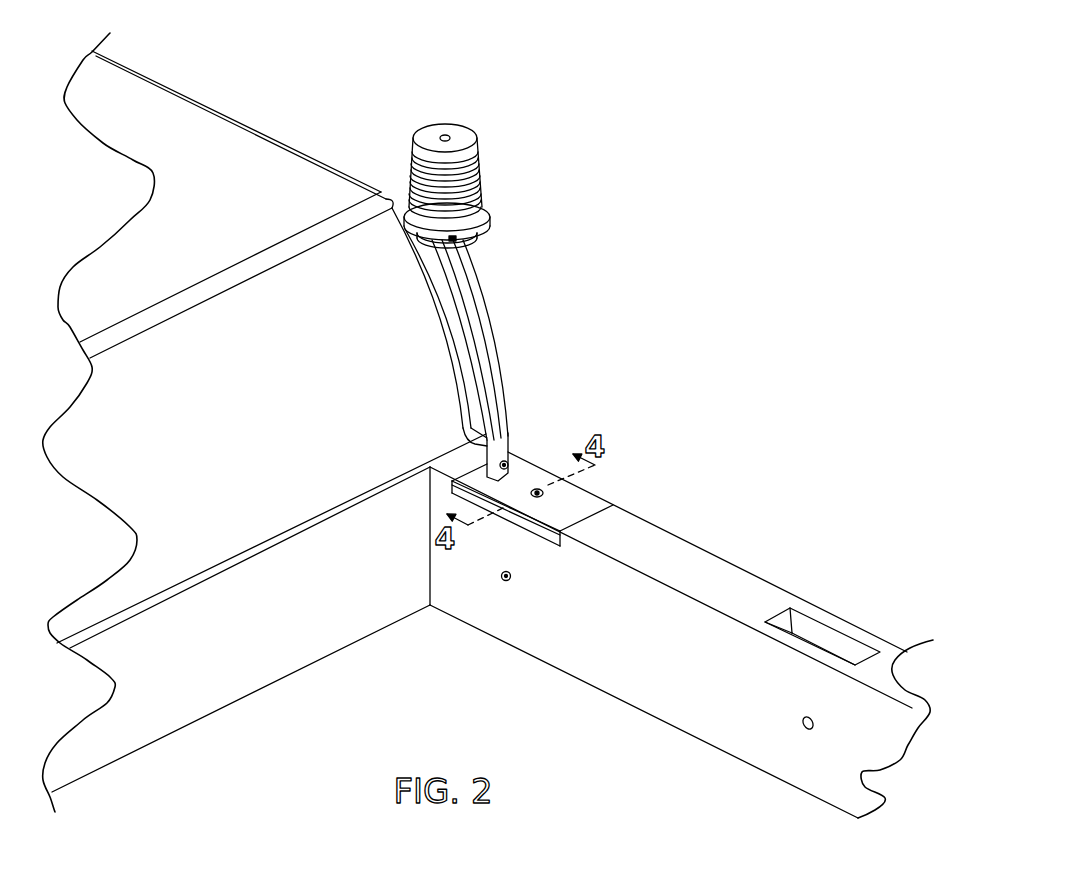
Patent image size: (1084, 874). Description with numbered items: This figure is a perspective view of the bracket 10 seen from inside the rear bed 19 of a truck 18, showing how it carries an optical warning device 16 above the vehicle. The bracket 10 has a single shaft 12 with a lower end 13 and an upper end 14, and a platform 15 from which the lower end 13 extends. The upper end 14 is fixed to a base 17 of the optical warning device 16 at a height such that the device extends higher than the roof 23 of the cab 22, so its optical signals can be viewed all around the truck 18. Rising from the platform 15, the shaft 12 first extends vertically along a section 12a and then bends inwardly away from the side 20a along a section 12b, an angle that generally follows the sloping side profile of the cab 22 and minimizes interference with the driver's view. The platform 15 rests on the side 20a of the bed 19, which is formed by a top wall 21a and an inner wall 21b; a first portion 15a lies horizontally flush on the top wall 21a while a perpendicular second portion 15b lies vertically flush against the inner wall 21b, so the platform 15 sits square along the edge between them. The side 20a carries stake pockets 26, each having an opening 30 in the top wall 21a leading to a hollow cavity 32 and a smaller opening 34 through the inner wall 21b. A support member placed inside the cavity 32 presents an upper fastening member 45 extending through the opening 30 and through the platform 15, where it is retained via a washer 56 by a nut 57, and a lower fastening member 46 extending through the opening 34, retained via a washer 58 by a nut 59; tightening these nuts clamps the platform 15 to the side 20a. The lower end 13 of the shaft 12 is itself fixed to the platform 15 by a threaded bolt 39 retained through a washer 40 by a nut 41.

The bracket 10 is at (627, 202).
The shaft 12 is at (506, 340).
The section of shaft 12a is at (510, 438).
The section of shaft 12b is at (483, 328).
The lower end 13 is at (461, 427).
The upper end 14 is at (460, 236).
The platform 15 is at (573, 525).
The first portion 15a is at (582, 522).
The second portion 15b is at (522, 528).
The optical warning device 16 is at (480, 155).
The base 17 is at (493, 200).
The truck 18 is at (320, 153).
The rear bed 19 is at (420, 703).
The side 20a is at (683, 550).
The top wall 21a is at (657, 528).
The inner wall 21b is at (608, 655).
The cab 22 is at (164, 86).
The roof 23 is at (220, 160).
The stake pocket 26 is at (780, 612).
The opening 30 is at (799, 603).
The cavity 32 is at (812, 632).
The opening 34 is at (805, 718).
The threaded bolt 39 is at (505, 464).
The washer 40 is at (511, 455).
The nut 41 is at (487, 470).
The upper fastening member 45 is at (537, 490).
The lower fastening member 46 is at (504, 579).
The washer 56 is at (572, 476).
The nut 57 is at (543, 493).
The washer 58 is at (504, 575).
The nut 59 is at (508, 582).